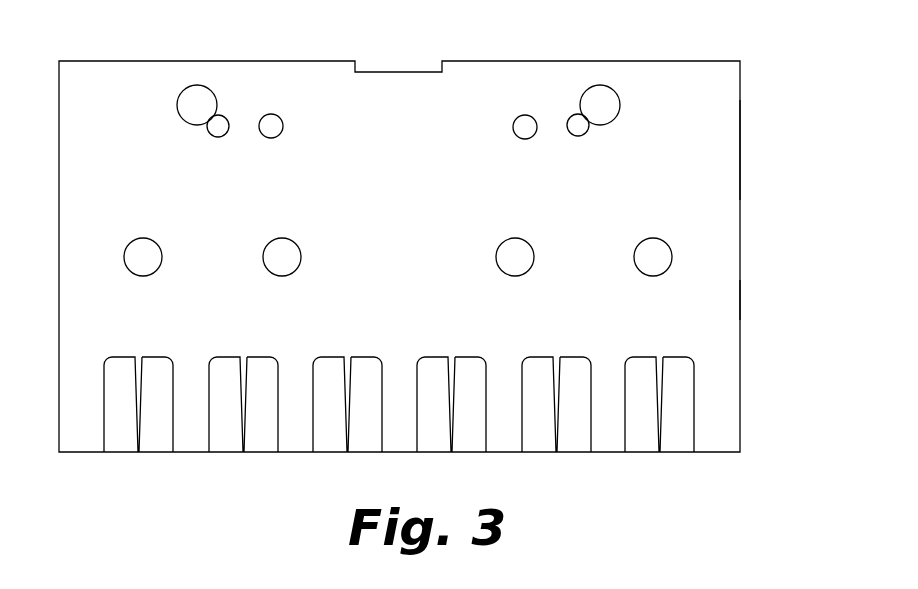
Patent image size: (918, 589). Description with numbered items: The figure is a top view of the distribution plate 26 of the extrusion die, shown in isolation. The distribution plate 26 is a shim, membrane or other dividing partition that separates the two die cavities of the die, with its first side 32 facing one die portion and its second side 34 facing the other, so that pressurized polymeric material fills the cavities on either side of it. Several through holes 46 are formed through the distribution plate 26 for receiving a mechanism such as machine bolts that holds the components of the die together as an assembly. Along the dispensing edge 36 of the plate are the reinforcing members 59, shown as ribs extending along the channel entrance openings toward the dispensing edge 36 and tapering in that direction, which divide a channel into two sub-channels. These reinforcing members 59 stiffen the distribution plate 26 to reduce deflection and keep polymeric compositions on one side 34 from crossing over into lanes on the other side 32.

The distribution plate 26 is at (713, 48).
The first side 32 is at (728, 178).
The second side 34 is at (715, 292).
The through holes 46 is at (272, 256).
The dispensing edge 36 is at (570, 452).
The reinforcing members 59 is at (243, 430).